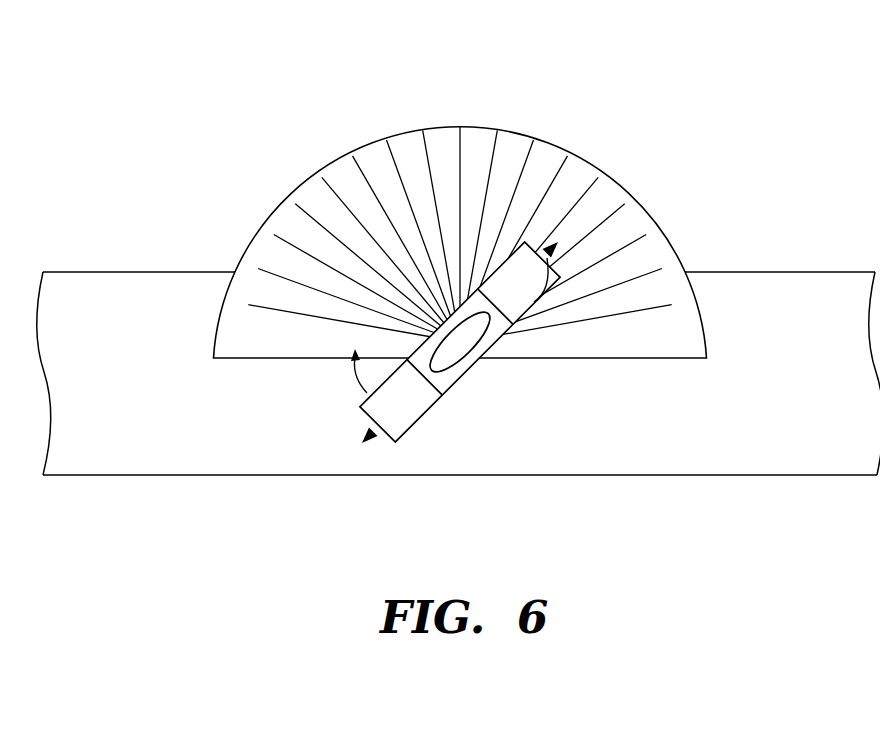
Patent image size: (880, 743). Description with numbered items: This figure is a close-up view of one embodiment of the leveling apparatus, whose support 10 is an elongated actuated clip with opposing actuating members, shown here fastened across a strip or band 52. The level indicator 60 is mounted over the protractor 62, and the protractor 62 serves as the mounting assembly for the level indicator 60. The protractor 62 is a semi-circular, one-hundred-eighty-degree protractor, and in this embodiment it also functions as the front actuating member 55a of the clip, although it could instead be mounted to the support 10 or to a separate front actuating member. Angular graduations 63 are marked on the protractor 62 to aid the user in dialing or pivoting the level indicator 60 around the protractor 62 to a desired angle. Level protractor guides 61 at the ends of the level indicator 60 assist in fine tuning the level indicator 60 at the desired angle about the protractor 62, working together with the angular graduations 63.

The support 10 is at (110, 81).
The strip / band 52 is at (72, 280).
The front actuating member 55a is at (422, 194).
The level indicator 60 is at (412, 412).
The level protractor guides 61 is at (365, 441).
The protractor 62 is at (396, 108).
The angular graduations 63 is at (530, 153).